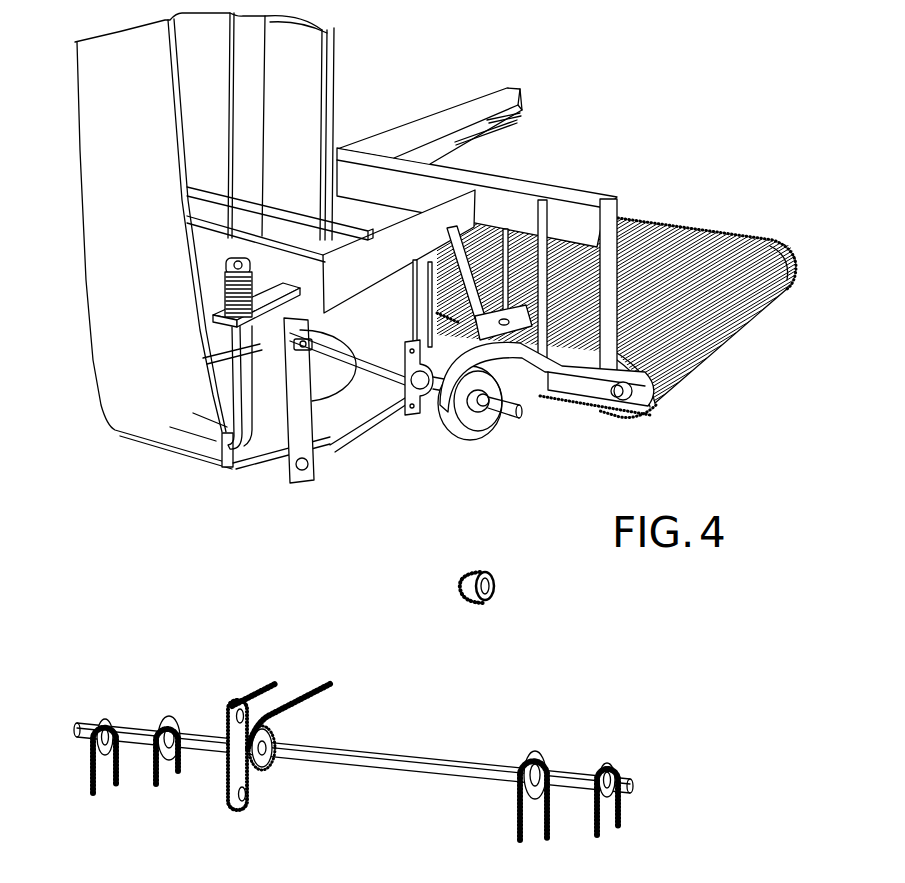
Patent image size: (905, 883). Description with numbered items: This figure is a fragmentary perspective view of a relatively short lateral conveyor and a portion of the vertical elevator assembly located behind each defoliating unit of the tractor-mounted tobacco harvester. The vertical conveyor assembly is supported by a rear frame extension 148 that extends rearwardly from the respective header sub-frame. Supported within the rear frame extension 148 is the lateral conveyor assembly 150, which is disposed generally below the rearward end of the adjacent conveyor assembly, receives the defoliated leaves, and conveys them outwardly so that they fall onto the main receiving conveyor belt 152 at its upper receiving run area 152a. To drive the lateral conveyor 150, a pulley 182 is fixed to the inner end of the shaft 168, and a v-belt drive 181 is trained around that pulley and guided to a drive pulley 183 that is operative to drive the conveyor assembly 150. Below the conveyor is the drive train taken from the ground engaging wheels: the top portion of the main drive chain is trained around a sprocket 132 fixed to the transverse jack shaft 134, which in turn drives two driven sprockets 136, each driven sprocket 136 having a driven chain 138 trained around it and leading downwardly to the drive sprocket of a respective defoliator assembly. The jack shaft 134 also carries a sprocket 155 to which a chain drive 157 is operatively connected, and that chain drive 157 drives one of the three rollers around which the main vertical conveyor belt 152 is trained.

The rear frame extension 148 is at (473, 102).
The lateral conveyor assembly 150 is at (712, 203).
The main receiving conveyor belt 152 is at (181, 470).
The upper receiving run area 152a is at (485, 246).
The sprocket 155 is at (298, 718).
The chain drive 157 is at (458, 582).
The shaft 168 is at (356, 360).
The v-belt drive 181 is at (563, 398).
The pulley 182 is at (470, 413).
The drive pulley 183 is at (466, 297).
The sprocket 132 is at (107, 722).
The transverse jack shaft 134 is at (445, 767).
The driven sprocket 136 is at (168, 719).
The driven chain 138 is at (517, 803).